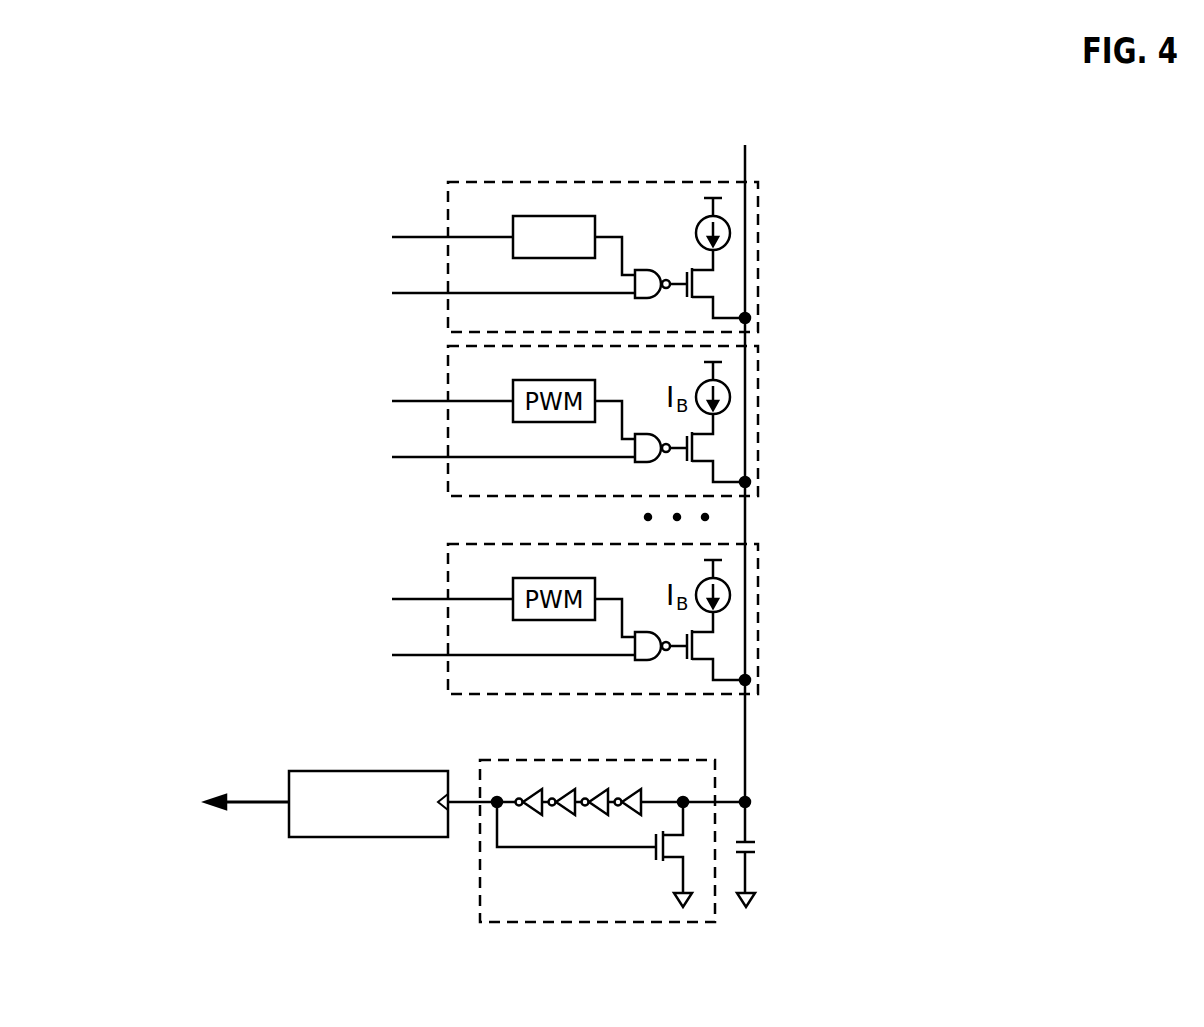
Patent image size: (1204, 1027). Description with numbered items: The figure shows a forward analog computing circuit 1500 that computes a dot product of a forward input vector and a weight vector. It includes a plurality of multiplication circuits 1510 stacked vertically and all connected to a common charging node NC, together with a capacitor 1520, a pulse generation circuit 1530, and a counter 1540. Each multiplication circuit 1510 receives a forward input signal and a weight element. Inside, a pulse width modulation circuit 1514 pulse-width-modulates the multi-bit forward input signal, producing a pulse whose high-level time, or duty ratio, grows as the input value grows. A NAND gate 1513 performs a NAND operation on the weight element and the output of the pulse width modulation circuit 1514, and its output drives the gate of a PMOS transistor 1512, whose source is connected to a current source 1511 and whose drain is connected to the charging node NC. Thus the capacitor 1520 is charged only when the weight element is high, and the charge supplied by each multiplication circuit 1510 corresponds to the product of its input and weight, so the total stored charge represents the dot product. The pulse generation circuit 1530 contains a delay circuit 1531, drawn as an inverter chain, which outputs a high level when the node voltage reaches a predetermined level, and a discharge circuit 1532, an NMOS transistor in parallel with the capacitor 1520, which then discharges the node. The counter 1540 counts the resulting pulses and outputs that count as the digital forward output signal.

The forward analog computing circuit 1500 is at (894, 141).
The multiplication circuit 1510 is at (758, 195).
The current source 1511 is at (730, 229).
The PMOS transistor 1512 is at (697, 287).
The NAND gate 1513 is at (647, 270).
The pulse width modulation circuit 1514 is at (550, 216).
The capacitor 1520 is at (762, 840).
The pulse generation circuit 1530 is at (573, 760).
The delay circuit 1531 is at (567, 812).
The discharge circuit 1532 is at (647, 857).
The counter 1540 is at (357, 771).